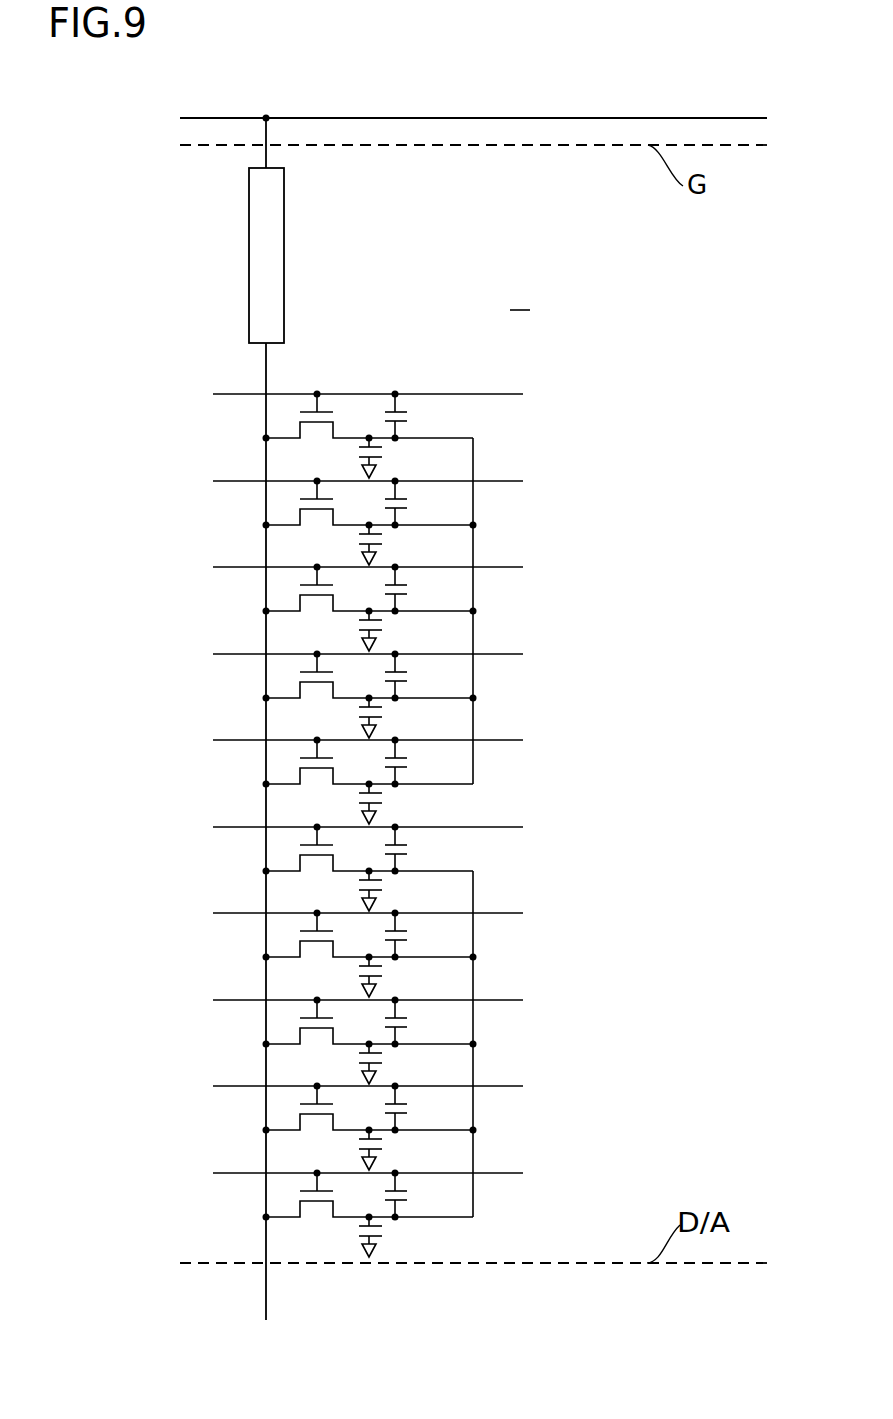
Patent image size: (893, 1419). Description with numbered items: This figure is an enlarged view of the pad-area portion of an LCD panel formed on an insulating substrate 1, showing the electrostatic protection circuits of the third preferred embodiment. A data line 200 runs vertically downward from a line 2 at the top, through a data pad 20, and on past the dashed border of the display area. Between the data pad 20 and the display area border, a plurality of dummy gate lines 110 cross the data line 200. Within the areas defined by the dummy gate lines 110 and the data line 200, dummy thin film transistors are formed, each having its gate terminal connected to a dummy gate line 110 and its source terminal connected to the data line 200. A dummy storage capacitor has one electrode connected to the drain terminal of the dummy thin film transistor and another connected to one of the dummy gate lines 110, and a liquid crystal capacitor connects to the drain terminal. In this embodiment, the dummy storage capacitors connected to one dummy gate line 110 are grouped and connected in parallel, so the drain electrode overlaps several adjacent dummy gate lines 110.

The insulating substrate 1 is at (520, 296).
The signal line 2 is at (648, 118).
The data pad 20 is at (284, 258).
The dummy gate line 110 is at (389, 824).
The data line 200 is at (262, 1288).